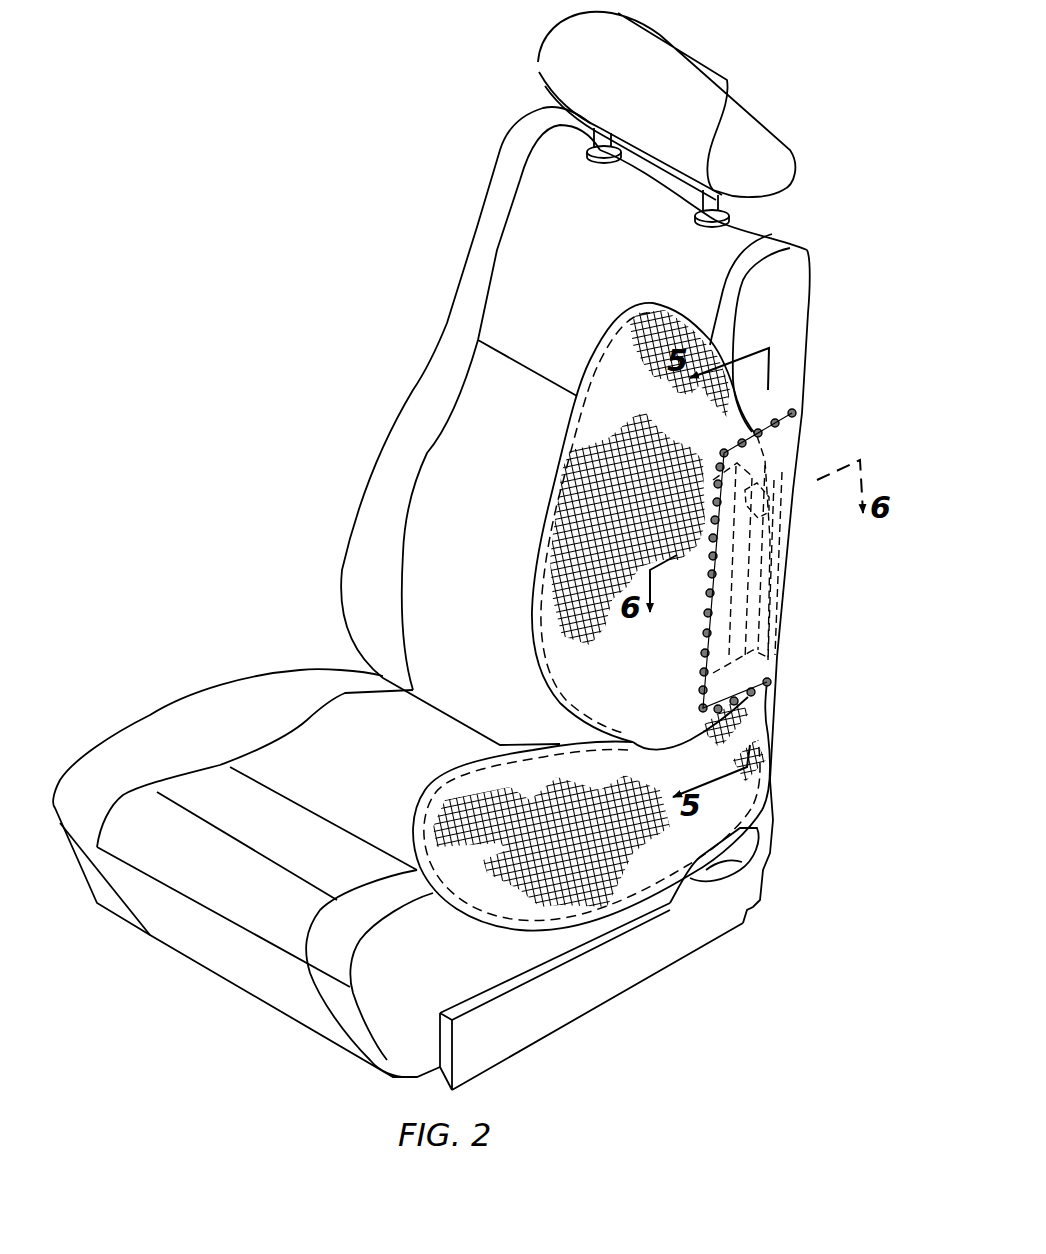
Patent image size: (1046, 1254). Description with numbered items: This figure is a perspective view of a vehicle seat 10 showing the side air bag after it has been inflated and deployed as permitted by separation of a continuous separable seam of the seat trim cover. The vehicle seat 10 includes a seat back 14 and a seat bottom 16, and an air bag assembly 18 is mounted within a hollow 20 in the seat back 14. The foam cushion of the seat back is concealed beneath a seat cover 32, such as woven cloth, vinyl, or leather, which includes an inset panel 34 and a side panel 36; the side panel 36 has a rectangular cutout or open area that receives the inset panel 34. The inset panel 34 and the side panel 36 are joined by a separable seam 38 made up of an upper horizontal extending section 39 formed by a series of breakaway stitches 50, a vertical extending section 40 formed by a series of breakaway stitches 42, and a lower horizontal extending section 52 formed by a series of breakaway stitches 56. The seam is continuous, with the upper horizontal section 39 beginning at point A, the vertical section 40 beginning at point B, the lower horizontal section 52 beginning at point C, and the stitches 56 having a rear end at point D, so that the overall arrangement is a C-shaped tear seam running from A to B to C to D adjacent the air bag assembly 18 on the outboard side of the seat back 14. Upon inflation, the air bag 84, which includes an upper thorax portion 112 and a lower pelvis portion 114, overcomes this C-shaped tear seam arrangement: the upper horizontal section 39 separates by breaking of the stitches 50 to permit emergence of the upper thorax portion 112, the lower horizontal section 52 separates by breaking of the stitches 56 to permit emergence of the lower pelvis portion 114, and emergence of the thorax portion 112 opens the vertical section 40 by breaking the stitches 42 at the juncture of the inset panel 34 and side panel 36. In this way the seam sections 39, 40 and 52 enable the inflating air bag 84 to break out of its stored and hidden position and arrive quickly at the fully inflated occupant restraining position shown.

The vehicle seat 10 is at (808, 242).
The seat back 14 is at (517, 150).
The seat bottom 16 is at (238, 733).
The air bag assembly 18 is at (770, 598).
The hollow 20 is at (768, 548).
The seat cover 32 is at (450, 497).
The inset panel 34 is at (765, 488).
The side panel 36 is at (797, 307).
The separable seam 38 is at (707, 617).
The upper horizontal extending section 39 is at (760, 438).
The vertical extending section 40 is at (705, 638).
The breakaway stitches 42 is at (702, 703).
The breakaway stitches 50 is at (730, 465).
The lower horizontal extending section 52 is at (770, 677).
The breakaway stitches 56 is at (760, 730).
The air bag 84 is at (543, 493).
The upper thorax portion 112 is at (577, 393).
The lower pelvis portion 114 is at (513, 750).
The point A is at (792, 413).
The point B is at (723, 447).
The point C is at (700, 723).
The point D is at (777, 660).